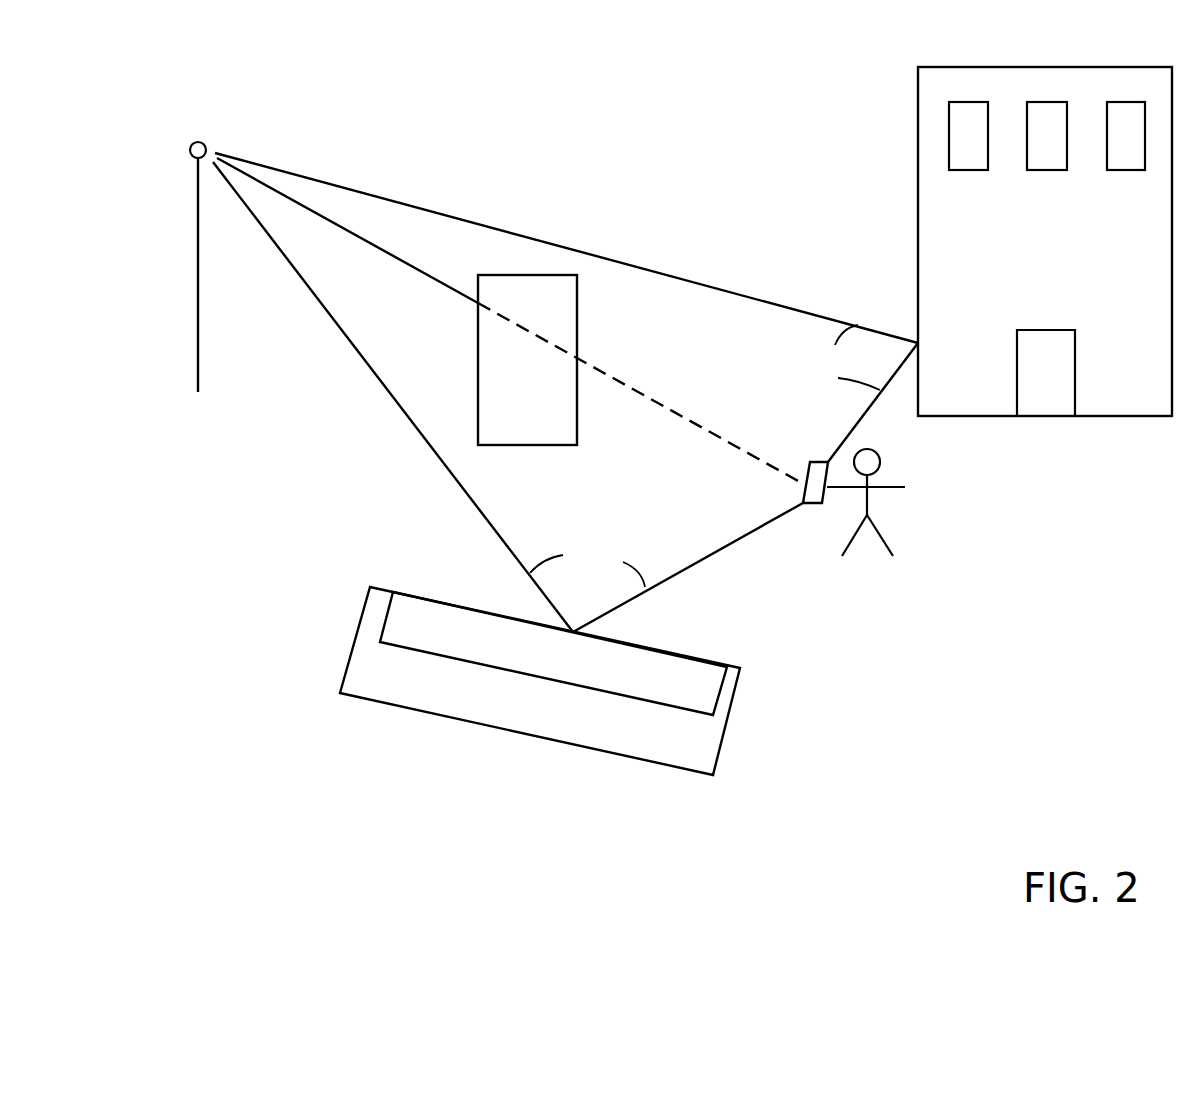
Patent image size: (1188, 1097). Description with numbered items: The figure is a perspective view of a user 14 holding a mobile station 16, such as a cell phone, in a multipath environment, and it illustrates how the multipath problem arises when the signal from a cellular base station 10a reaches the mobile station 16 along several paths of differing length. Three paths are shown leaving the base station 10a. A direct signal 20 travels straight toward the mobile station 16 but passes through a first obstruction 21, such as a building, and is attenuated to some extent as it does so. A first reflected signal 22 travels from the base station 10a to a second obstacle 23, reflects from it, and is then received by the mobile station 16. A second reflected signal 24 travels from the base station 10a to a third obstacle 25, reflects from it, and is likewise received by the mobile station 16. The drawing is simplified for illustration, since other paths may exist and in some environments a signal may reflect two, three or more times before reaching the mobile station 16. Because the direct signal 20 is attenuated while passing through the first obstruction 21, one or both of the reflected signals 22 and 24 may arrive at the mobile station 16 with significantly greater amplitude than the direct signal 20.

The cellular base station 10a is at (208, 145).
The user 14 is at (898, 508).
The mobile station 16 is at (808, 472).
The direct signal 20 is at (635, 390).
The first obstruction 21 is at (578, 345).
The first reflected signal 22 is at (844, 357).
The second obstacle 23 is at (975, 65).
The second reflected signal 24 is at (587, 562).
The third obstacle 25 is at (410, 593).